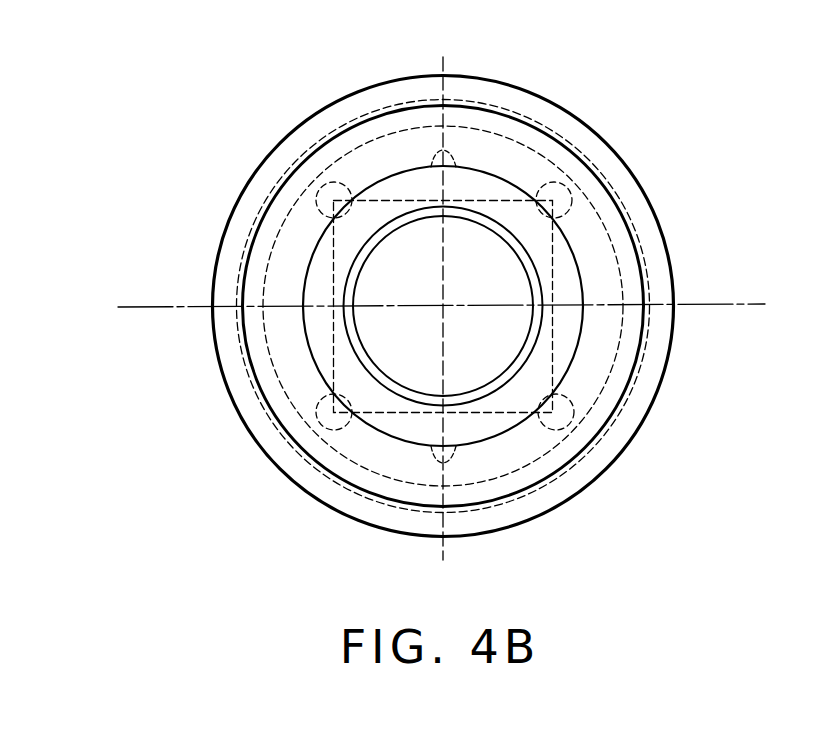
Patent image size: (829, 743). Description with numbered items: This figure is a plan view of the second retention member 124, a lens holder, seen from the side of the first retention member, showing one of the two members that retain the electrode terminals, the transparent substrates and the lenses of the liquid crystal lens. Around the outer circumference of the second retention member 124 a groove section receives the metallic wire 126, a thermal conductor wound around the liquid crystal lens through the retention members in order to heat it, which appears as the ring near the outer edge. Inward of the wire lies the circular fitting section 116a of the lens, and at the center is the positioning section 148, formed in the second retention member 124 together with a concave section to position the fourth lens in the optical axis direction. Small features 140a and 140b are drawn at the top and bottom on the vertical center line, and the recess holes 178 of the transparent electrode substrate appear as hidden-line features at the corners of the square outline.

The second retention member 124 is at (617, 150).
The metallic wire 126 is at (395, 100).
The fitting section 116a is at (586, 329).
The positioning section 148 is at (491, 217).
The positioning projection 140a is at (457, 153).
The positioning projection 140b is at (450, 463).
The recess holes 178 is at (333, 292).